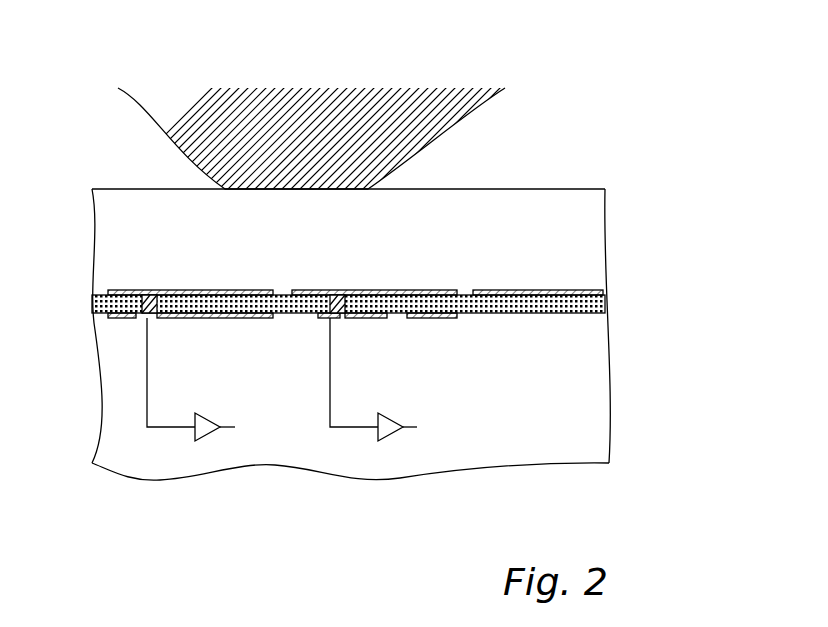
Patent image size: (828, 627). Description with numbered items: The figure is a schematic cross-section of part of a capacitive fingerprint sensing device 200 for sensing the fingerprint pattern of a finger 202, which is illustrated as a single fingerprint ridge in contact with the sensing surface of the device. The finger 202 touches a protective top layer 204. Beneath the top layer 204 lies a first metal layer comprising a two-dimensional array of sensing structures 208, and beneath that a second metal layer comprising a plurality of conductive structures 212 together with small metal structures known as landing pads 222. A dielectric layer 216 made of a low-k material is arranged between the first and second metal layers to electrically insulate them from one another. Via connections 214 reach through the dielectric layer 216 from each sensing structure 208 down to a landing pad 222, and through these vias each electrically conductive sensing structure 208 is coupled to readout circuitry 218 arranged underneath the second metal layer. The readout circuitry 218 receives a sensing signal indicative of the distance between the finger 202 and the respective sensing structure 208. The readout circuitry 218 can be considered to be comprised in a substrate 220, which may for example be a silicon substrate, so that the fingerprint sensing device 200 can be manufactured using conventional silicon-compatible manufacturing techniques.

The capacitive fingerprint sensing device 200 is at (611, 67).
The finger 202 is at (440, 113).
The protective top layer 204 is at (595, 218).
The sensing structures 208 is at (225, 291).
The conductive structures 212 is at (122, 318).
The via connections 214 is at (163, 291).
The dielectric layer 216 is at (606, 305).
The readout circuitry 218 is at (212, 432).
The substrate 220 is at (600, 400).
The landing pads 222 is at (157, 323).